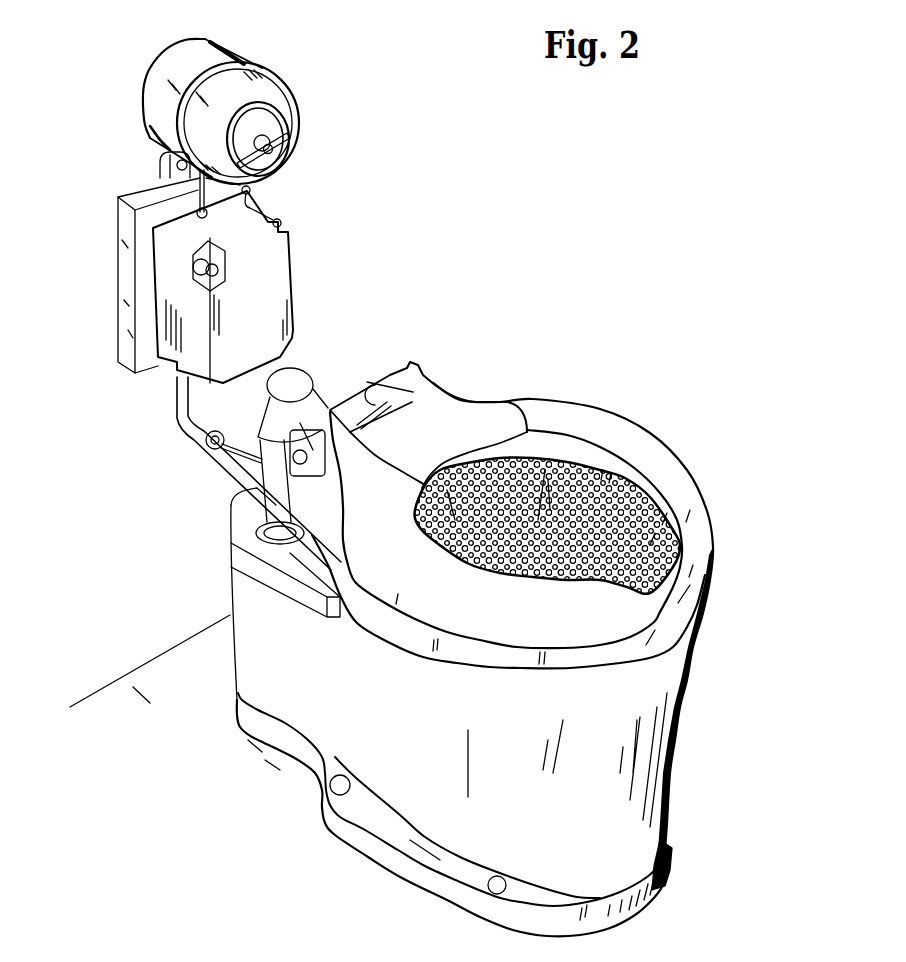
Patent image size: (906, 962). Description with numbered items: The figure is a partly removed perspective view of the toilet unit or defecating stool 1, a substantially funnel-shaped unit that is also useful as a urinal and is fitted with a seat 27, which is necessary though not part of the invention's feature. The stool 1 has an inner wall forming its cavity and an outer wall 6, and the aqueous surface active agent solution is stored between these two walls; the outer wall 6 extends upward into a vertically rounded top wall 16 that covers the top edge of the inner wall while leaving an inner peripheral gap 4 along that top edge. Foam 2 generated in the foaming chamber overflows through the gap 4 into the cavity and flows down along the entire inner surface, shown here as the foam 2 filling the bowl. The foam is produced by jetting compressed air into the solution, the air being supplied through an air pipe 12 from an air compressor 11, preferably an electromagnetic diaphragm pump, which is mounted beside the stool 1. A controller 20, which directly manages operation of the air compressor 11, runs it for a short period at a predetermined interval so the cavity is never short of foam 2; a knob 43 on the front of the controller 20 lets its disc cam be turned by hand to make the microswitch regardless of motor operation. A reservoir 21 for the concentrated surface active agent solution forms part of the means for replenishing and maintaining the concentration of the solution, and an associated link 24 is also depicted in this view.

The toilet unit or defecating stool 1 is at (747, 677).
The foam 2 is at (620, 553).
The inner peripheral gap 4 is at (585, 473).
The outer wall 6 is at (682, 793).
The air compressor 11 is at (280, 273).
The air pipe 12 is at (175, 412).
The vertically rounded top wall 16 is at (640, 480).
The controller 20 is at (260, 81).
The reservoir 21 is at (298, 378).
The link 24 is at (232, 448).
The seat 27 is at (453, 403).
The knob 43 is at (290, 148).